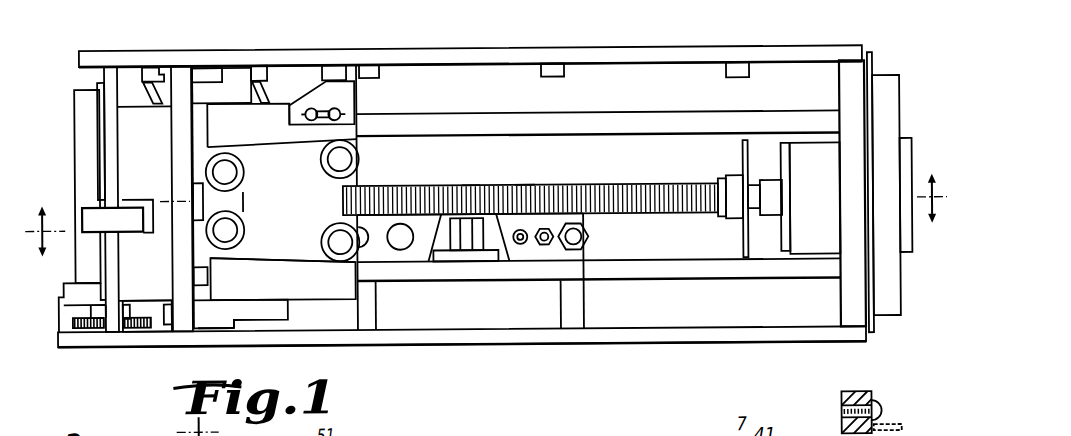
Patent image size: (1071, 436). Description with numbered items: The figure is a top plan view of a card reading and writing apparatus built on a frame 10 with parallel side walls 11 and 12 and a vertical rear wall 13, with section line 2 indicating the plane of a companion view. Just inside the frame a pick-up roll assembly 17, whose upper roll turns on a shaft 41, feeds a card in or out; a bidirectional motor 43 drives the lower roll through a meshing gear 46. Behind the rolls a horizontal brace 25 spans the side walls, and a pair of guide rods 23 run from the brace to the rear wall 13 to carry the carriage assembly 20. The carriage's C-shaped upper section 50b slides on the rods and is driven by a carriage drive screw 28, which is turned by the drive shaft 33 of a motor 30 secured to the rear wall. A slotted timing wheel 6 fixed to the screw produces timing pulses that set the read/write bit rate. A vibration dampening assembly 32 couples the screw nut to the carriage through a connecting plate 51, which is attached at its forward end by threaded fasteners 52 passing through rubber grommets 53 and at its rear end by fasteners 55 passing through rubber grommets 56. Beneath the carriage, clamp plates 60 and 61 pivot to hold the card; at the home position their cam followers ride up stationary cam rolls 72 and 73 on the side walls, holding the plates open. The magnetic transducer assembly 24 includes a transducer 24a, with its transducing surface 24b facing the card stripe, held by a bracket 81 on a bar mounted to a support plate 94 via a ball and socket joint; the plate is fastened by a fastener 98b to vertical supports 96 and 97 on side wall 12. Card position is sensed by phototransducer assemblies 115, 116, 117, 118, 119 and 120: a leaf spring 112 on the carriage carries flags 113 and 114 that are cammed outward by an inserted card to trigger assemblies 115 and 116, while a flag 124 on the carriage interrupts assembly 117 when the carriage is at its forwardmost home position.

The section line 2- 2 is at (480, 226).
The slotted timing wheel 6 is at (738, 236).
The frame 10 is at (863, 44).
The side wall 11 is at (499, 52).
The side wall 12 is at (497, 333).
The rear wall 13 is at (852, 295).
The pick-up roll assembly 17 is at (88, 213).
The carriage assembly 20 is at (374, 148).
The guide rods 23 is at (530, 122).
The magnetic transducer assembly 24 is at (487, 276).
The transducer 24a is at (528, 186).
The transducing surface 24b is at (468, 186).
The brace 25 is at (176, 133).
The carriage drive screw 28 is at (640, 184).
The motor 30 is at (886, 108).
The vibration dampening assembly 32 is at (308, 255).
The drive shaft 33 is at (753, 198).
The shaft 41 is at (112, 142).
The bidirectional motor 43 is at (75, 120).
The gear 46 is at (133, 330).
The upper carriage section 50b is at (306, 292).
The vibration dampening connecting plate 51 is at (273, 235).
The threaded fasteners 52 is at (240, 216).
The rubber grommets 53 is at (214, 196).
The fasteners 55 is at (331, 226).
The rubber grommets 56 is at (325, 173).
The clamp plate 60 is at (221, 88).
The clamp plate 61 is at (233, 312).
The cam roll 72 is at (206, 70).
The cam roll 73 is at (230, 316).
The bracket 81 is at (443, 257).
The support plate 94 is at (572, 250).
The vertical support 96 is at (377, 316).
The vertical support 97 is at (593, 316).
The fastener 98b is at (578, 233).
The leaf spring 112 is at (216, 111).
The flag 113 is at (152, 100).
The flag 114 is at (270, 102).
The phototransducer assembly 115 is at (152, 65).
The phototransducer assembly 116 is at (259, 64).
The phototransducer assembly 117 is at (334, 64).
The phototransducer assembly 118 is at (375, 64).
The phototransducer assembly 119 is at (560, 64).
The phototransducer assembly 120 is at (742, 63).
The flag 124 is at (360, 91).